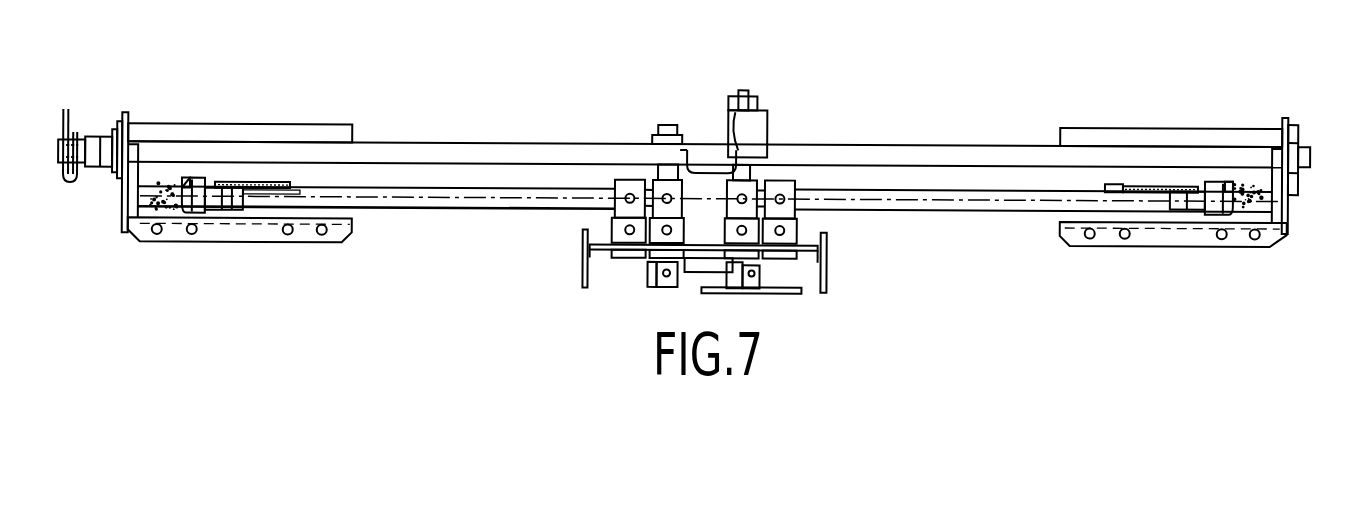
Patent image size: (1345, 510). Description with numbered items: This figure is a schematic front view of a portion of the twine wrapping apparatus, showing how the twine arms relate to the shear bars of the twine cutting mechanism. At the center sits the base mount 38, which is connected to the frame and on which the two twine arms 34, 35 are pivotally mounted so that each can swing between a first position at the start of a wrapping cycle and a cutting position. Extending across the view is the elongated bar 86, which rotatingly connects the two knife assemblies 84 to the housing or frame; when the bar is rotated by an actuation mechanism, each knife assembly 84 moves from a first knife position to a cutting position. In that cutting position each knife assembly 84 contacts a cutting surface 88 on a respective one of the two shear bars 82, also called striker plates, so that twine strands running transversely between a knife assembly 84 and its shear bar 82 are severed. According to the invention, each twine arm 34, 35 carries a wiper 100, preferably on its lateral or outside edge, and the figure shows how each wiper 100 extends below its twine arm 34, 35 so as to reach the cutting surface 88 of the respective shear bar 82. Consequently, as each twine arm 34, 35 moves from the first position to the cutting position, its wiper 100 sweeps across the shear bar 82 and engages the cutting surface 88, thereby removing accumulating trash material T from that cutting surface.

The twine arm 34 is at (963, 216).
The twine arm 35 is at (469, 218).
The base mount 38 is at (603, 256).
The shear bar 82 is at (345, 240).
The knife assembly 84 is at (330, 137).
The elongated bar 86 is at (521, 149).
The cutting surface 88 is at (212, 216).
The wiper 100 is at (195, 181).
The trash material T is at (148, 195).